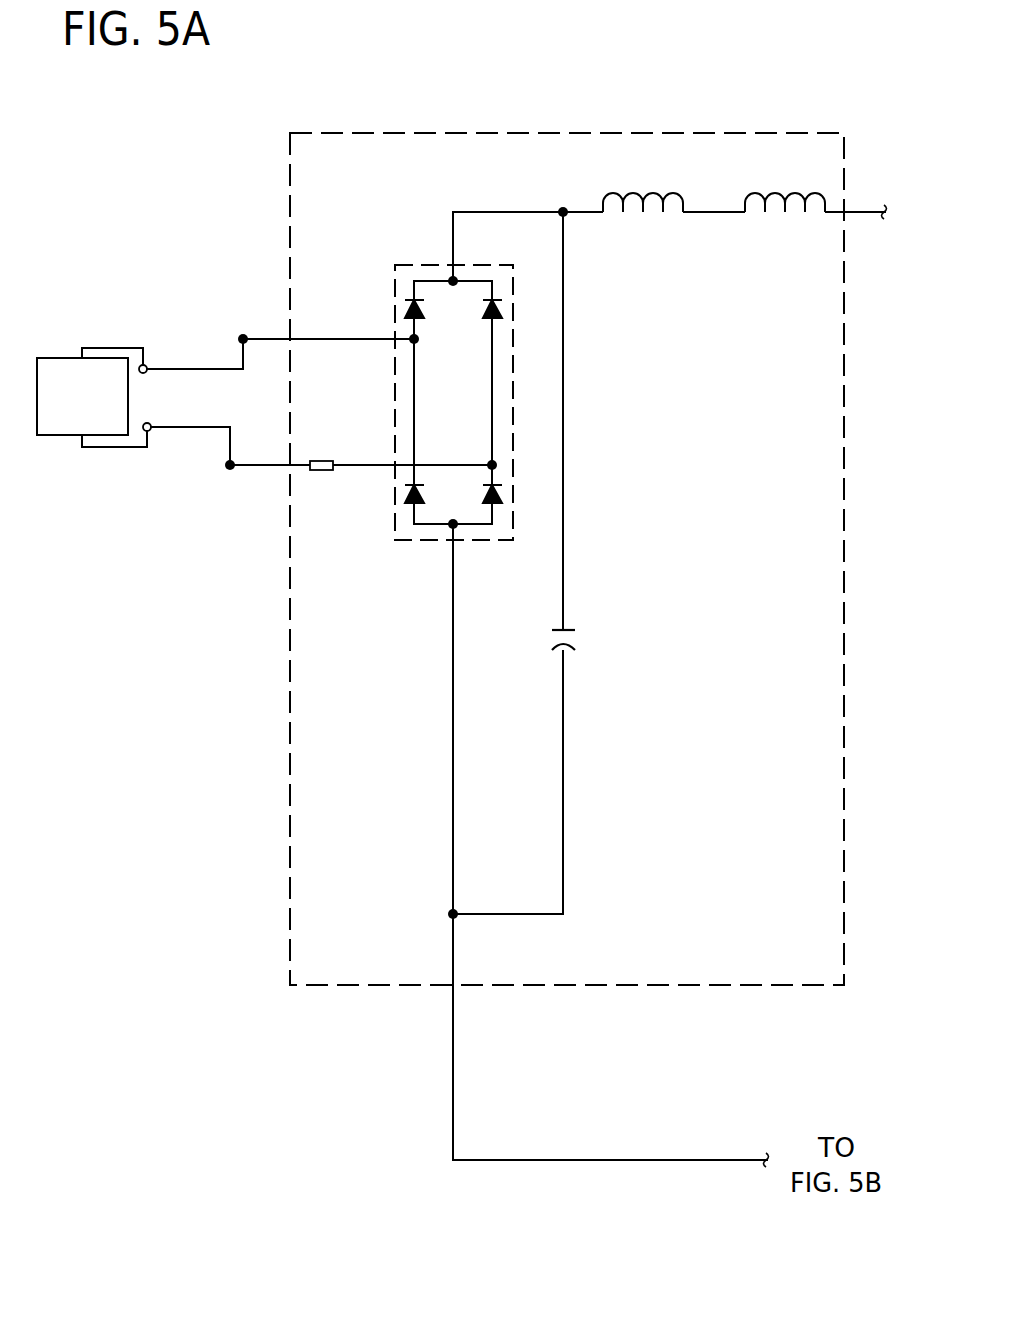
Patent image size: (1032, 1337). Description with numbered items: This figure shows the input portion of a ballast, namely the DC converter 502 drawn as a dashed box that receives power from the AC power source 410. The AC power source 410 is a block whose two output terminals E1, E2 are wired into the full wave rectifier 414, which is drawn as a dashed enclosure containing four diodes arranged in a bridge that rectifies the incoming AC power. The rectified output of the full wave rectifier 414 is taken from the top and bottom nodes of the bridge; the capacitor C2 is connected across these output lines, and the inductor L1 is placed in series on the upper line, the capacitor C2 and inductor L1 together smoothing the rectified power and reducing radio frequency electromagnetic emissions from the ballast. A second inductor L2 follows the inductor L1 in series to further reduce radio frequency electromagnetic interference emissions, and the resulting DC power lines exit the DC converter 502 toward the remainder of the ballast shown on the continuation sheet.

The DC converter 502 is at (556, 130).
The AC power source 410 is at (55, 358).
The full wave rectifier 414 is at (412, 540).
The first input terminal E1 is at (317, 446).
The second input terminal E2 is at (276, 353).
The inductor L1 is at (643, 186).
The second inductor L2 is at (785, 186).
The capacitor C2 is at (577, 625).